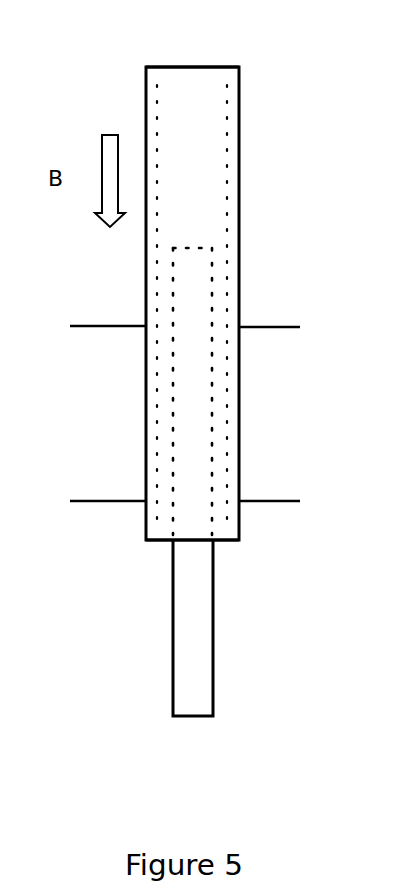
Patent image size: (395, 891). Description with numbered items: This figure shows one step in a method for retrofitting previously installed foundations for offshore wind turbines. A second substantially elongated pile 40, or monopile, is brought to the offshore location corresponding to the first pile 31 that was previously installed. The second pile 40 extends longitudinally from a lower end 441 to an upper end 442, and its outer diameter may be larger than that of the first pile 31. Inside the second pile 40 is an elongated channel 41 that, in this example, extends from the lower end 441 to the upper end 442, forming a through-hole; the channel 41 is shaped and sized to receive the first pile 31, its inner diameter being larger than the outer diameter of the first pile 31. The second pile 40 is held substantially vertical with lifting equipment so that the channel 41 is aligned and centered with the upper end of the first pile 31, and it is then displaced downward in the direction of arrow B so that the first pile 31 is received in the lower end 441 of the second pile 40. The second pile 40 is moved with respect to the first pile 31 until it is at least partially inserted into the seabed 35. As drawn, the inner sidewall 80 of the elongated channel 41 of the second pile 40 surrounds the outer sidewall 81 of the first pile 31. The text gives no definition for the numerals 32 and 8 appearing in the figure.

The upper end 442 is at (190, 67).
The elongated channel 41 is at (197, 175).
The inner sidewall 80 is at (228, 215).
The upper transverse member 32 is at (272, 325).
The outer sidewall 81 is at (173, 387).
The second pile 40 is at (146, 445).
The seabed 35 is at (252, 498).
The lower end 441 is at (190, 547).
The first pile 31 is at (193, 653).
The partially visible element 8 is at (389, 379).